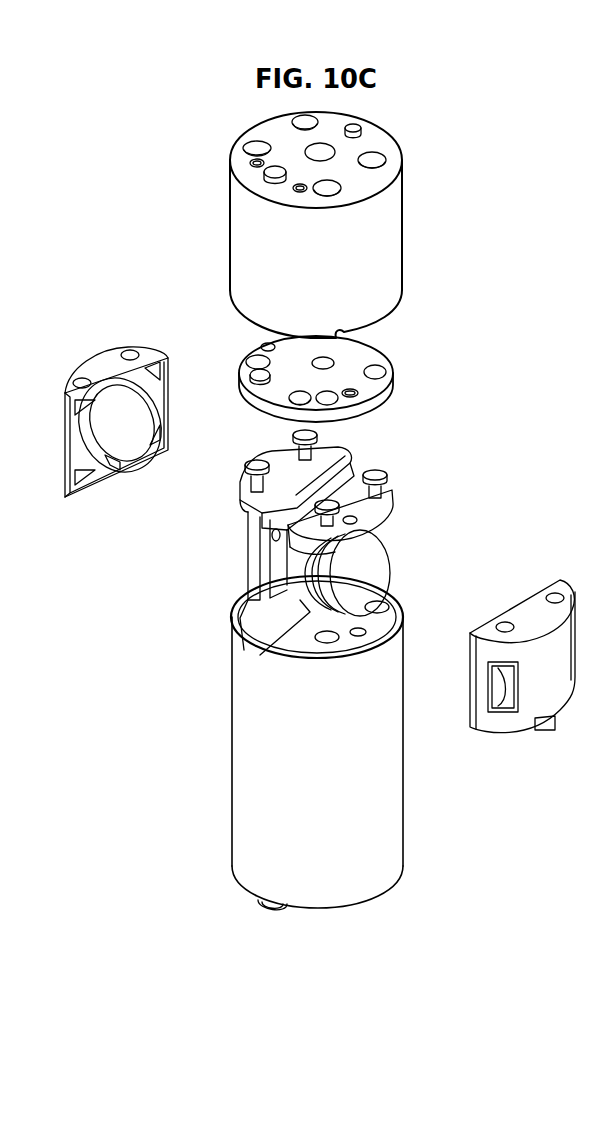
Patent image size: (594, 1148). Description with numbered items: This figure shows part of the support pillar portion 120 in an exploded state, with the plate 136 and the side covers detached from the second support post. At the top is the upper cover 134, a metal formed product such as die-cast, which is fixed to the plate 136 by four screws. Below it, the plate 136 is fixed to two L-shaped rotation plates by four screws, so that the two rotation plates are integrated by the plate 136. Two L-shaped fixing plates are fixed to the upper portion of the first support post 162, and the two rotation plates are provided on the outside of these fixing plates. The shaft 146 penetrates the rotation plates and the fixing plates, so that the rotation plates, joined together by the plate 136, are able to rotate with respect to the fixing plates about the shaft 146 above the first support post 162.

The support pillar portion 120 is at (466, 908).
The upper cover 134 is at (387, 238).
The plate 136 is at (380, 337).
The shaft 146 is at (378, 568).
The first support post 162 is at (405, 778).